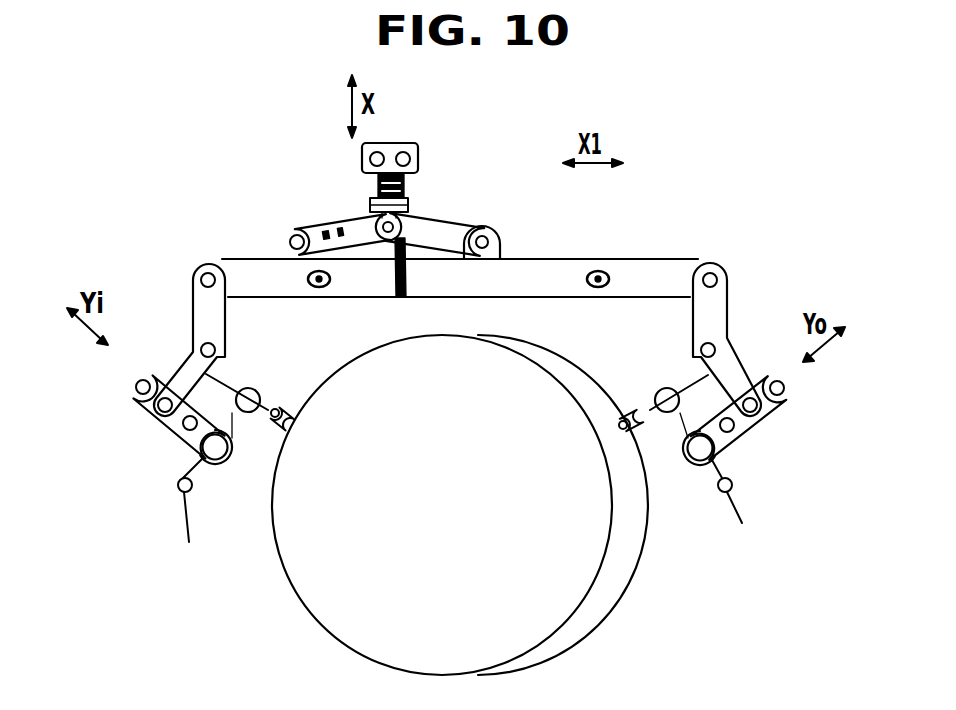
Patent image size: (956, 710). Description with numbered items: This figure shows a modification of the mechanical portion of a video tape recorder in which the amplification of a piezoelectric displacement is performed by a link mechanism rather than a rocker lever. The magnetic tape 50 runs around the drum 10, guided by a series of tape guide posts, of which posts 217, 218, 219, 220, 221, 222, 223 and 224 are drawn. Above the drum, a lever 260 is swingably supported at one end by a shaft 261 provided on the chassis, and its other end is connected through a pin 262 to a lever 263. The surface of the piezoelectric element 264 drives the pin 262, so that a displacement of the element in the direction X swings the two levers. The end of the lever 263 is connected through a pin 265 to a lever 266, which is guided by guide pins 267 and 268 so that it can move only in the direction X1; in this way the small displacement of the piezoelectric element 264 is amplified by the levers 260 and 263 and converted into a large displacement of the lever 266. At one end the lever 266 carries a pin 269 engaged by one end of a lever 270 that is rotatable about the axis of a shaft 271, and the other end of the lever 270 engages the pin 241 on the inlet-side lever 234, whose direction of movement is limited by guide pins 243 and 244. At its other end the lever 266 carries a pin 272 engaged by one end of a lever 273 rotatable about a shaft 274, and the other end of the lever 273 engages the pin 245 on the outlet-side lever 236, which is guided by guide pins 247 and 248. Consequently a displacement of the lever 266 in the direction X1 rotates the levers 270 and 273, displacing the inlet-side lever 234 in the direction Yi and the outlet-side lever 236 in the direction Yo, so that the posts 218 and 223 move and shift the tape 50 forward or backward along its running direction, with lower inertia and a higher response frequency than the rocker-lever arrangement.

The drum 10 is at (355, 370).
The magnetic tape 50 is at (182, 533).
The tape guide post 217 is at (178, 488).
The tape guide post 218 is at (198, 455).
The tape guide post 219 is at (251, 387).
The tape guide post 220 is at (278, 406).
The tape guide post 221 is at (620, 418).
The tape guide post 222 is at (665, 388).
The tape guide post 223 is at (722, 453).
The tape guide post 224 is at (736, 486).
The inlet-side lever 234 is at (133, 404).
The outlet-side lever 236 is at (779, 416).
The pin 241 is at (152, 425).
The guide pin 243 is at (128, 385).
The guide pin 244 is at (236, 439).
The pin 245 is at (752, 398).
The guide pin 247 is at (795, 385).
The guide pin 248 is at (688, 449).
The lever 260 is at (327, 226).
The shaft 261 is at (288, 236).
The pin 262 is at (374, 224).
The lever 263 is at (442, 232).
The piezoelectric element 264 is at (420, 180).
The pin 265 is at (490, 230).
The lever 266 is at (655, 268).
The guide pin 267 is at (322, 287).
The guide pin 268 is at (598, 268).
The pin 269 is at (206, 270).
The lever 270 is at (194, 303).
The shaft 271 is at (200, 348).
The pin 272 is at (715, 264).
The lever 273 is at (728, 302).
The shaft 274 is at (725, 352).